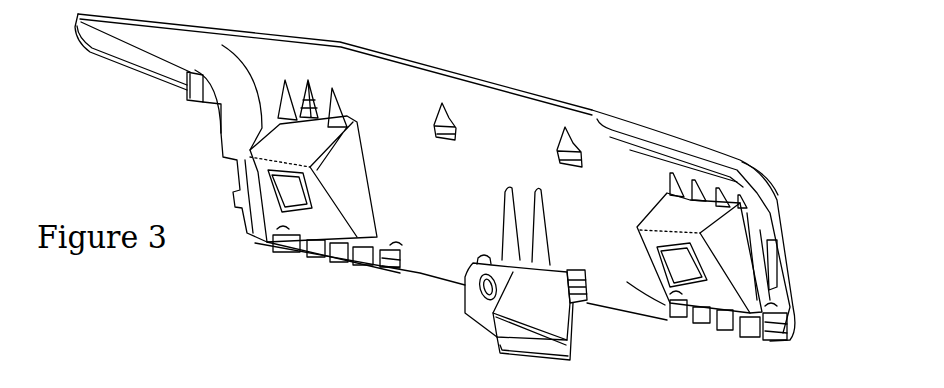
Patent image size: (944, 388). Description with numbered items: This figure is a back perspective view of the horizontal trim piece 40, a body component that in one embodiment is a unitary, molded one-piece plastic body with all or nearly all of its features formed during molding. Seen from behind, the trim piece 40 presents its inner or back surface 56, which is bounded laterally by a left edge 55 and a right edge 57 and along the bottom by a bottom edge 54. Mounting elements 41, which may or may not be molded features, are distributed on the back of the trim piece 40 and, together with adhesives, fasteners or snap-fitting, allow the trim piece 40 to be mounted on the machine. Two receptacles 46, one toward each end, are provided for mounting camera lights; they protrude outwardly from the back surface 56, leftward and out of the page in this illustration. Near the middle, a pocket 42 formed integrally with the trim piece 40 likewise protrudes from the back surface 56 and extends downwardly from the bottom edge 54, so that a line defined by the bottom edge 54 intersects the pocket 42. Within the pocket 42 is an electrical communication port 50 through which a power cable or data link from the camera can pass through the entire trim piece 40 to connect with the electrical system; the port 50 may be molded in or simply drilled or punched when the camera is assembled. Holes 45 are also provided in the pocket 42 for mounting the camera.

The horizontal trim piece 40 is at (743, 134).
The mounting elements 41 is at (318, 108).
The pocket 42 is at (577, 322).
The holes 45 is at (495, 335).
The receptacles 46 is at (243, 160).
The electrical communication port 50 is at (472, 280).
The bottom edge 54 is at (407, 282).
The left edge 55 is at (772, 172).
The back surface 56 is at (627, 280).
The right edge 57 is at (168, 86).